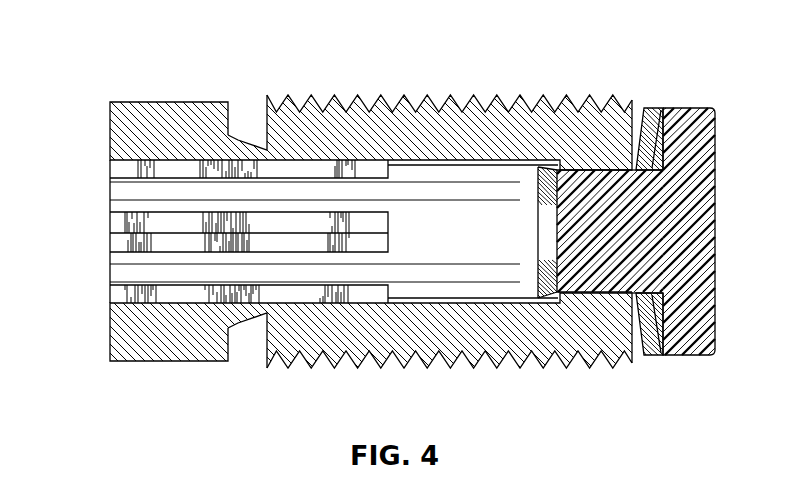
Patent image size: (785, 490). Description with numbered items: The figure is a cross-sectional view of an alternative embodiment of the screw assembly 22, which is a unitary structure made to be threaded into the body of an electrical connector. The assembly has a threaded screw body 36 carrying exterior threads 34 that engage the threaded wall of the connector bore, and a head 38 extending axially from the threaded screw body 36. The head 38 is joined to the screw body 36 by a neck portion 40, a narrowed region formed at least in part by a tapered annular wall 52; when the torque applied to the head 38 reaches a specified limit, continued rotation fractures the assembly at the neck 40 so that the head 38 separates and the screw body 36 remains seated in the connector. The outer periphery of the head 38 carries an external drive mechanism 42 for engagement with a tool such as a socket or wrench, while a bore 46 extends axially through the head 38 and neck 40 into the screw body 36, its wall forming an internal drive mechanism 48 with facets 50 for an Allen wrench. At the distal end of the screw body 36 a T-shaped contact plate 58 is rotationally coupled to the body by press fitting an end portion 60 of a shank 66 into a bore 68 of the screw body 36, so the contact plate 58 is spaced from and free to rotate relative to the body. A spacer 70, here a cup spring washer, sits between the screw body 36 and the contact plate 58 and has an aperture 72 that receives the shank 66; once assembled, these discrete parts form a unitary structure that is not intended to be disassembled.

The screw assembly 22 is at (215, 68).
The exterior threads 34 is at (533, 357).
The threaded screw body 36 is at (477, 97).
The head 38 is at (143, 362).
The neck portion 40 is at (242, 142).
The external drive mechanism 42 is at (127, 100).
The bore 46 is at (123, 272).
The internal drive mechanism 48 is at (178, 260).
The facets 50 is at (373, 168).
The tapered annular wall 52 is at (248, 318).
The contact plate 58 is at (695, 108).
The end portion 60 is at (563, 170).
The shank 66 is at (602, 187).
The bore 68 is at (622, 290).
The spacer 70 is at (654, 108).
The aperture 72 is at (641, 173).